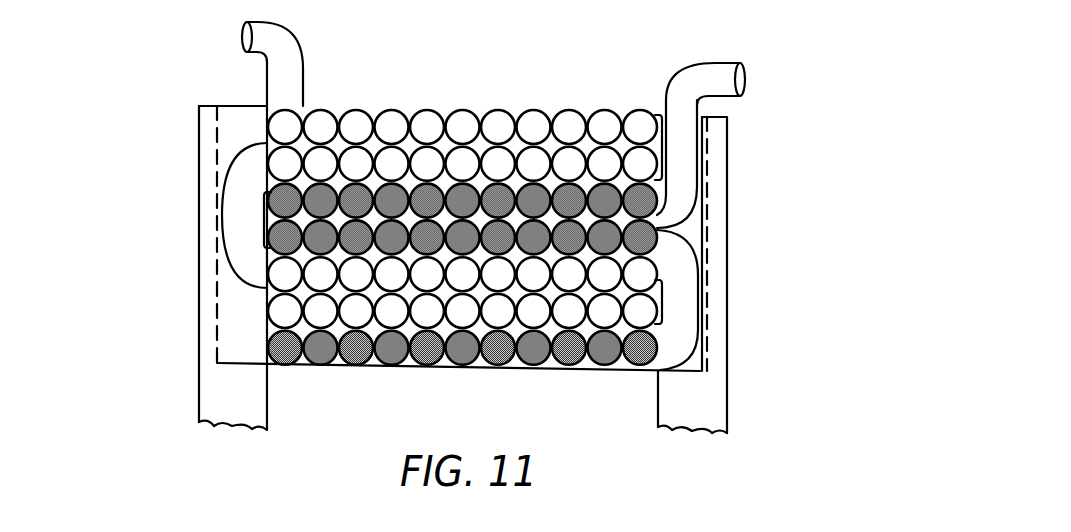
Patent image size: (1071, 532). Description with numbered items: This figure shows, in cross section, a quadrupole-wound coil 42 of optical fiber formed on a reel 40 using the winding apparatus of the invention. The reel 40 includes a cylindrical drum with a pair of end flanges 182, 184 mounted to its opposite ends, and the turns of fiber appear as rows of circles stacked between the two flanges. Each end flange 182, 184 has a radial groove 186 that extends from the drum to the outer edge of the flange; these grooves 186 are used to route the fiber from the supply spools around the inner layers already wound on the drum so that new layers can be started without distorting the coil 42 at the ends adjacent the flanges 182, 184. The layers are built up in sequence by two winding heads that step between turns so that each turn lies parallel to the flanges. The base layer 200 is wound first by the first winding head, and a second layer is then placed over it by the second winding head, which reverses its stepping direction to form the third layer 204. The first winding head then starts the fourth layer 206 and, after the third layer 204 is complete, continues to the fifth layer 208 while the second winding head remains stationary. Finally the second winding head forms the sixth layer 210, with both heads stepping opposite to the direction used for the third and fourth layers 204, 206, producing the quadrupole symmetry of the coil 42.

The coil 42 is at (567, 74).
The reel 40 is at (728, 158).
The end flange 182 is at (197, 360).
The end flange 184 is at (728, 330).
The radial groove 186 is at (218, 281).
The base layer 200 is at (267, 347).
The third layer 204 is at (267, 315).
The fourth layer 206 is at (266, 237).
The fifth layer 208 is at (268, 135).
The sixth layer 210 is at (362, 110).